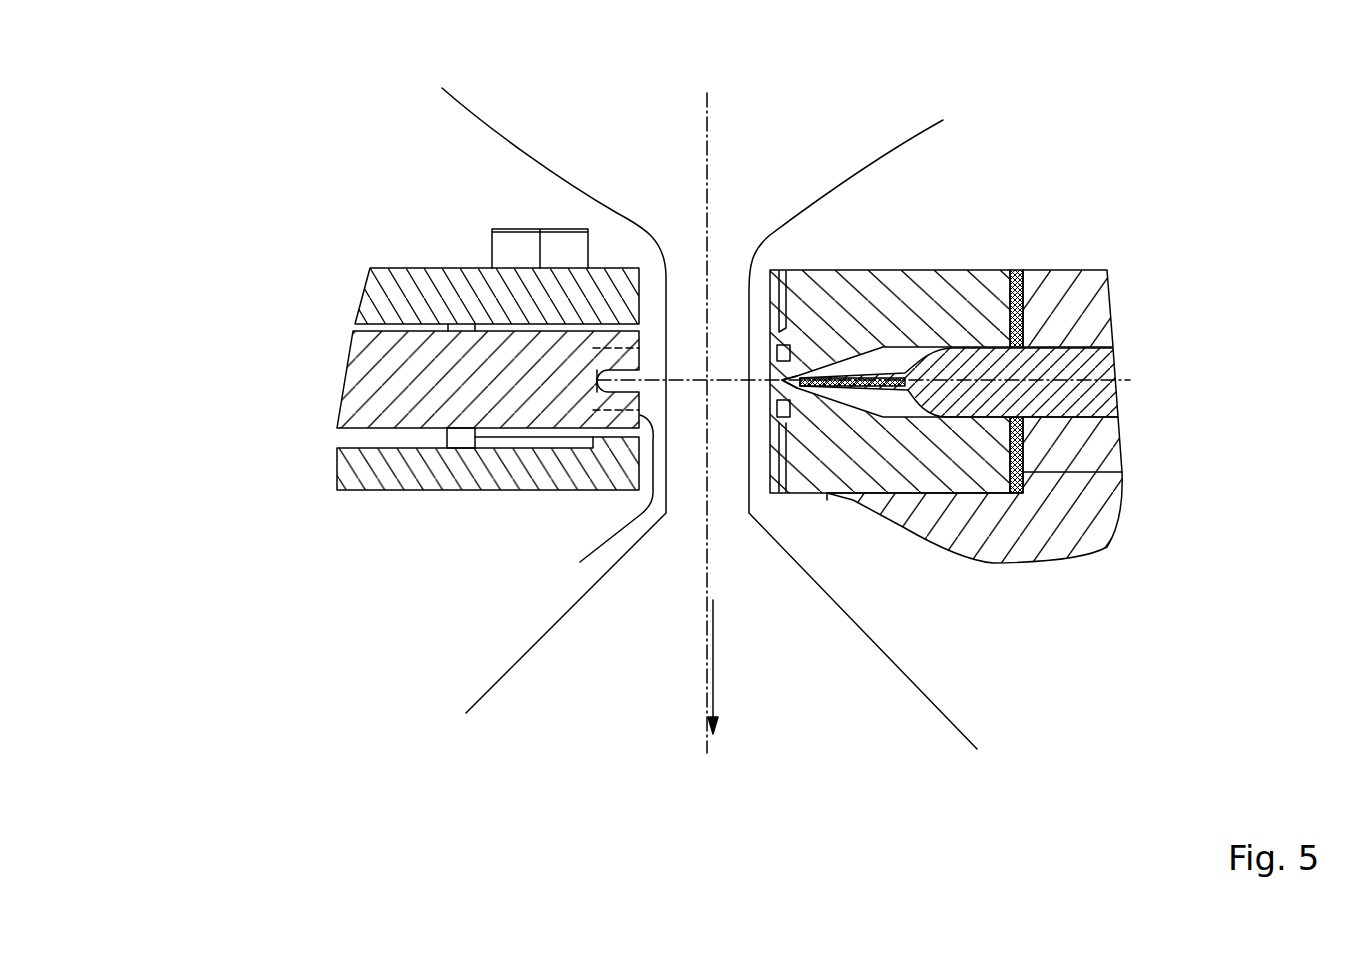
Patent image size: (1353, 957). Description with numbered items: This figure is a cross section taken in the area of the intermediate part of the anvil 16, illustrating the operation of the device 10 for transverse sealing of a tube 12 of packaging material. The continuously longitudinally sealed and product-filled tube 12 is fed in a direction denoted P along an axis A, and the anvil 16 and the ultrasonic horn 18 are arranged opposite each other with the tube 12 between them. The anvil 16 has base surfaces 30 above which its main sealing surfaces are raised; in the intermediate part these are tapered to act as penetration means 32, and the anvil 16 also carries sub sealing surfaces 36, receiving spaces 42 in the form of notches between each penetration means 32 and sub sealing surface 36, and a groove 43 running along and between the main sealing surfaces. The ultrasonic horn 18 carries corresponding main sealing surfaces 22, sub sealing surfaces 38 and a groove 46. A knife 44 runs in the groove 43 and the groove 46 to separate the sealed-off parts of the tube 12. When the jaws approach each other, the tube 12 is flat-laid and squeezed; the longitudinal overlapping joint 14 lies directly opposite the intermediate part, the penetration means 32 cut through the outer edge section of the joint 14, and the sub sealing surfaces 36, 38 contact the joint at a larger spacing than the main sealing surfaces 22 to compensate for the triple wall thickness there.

The device 10 is at (1230, 261).
The tube 12 is at (975, 123).
The overlapping joint 14 is at (963, 734).
The anvil 16 is at (1017, 396).
The ultrasonic horn 18 is at (233, 404).
The main sealing surfaces 22 is at (601, 498).
The base surfaces 30 is at (780, 474).
The penetration means 32 is at (778, 343).
The sub sealing surfaces 36 is at (778, 362).
The sub sealing surfaces 38 is at (640, 358).
The receiving spaces 42 is at (778, 403).
The groove 43 is at (787, 377).
The knife 44 is at (903, 373).
The groove 46 is at (614, 380).
The axis A is at (708, 93).
The feeding direction P is at (713, 688).